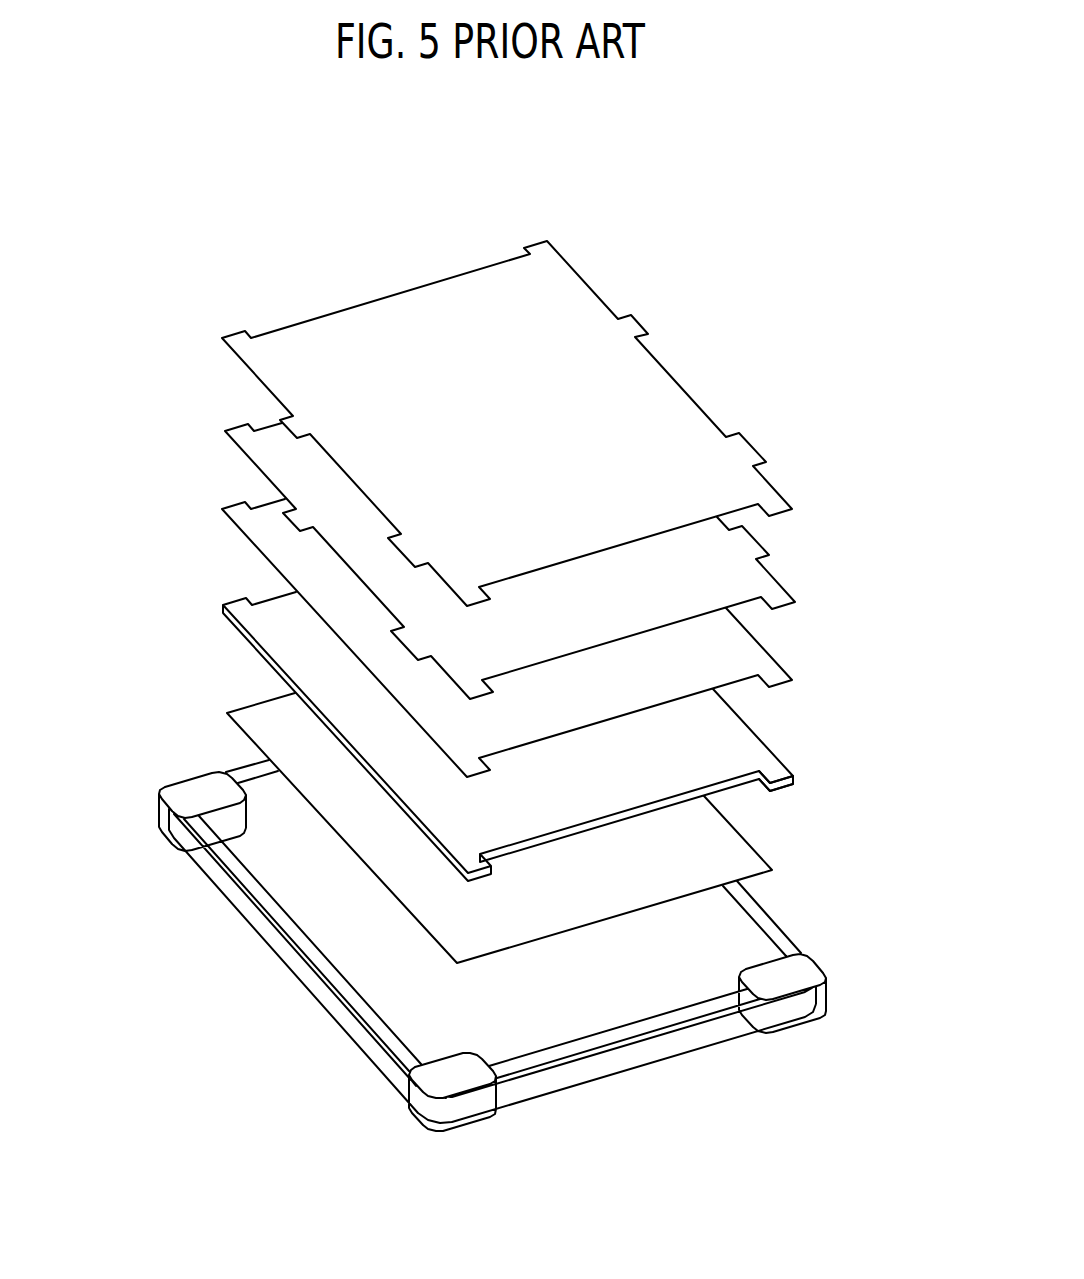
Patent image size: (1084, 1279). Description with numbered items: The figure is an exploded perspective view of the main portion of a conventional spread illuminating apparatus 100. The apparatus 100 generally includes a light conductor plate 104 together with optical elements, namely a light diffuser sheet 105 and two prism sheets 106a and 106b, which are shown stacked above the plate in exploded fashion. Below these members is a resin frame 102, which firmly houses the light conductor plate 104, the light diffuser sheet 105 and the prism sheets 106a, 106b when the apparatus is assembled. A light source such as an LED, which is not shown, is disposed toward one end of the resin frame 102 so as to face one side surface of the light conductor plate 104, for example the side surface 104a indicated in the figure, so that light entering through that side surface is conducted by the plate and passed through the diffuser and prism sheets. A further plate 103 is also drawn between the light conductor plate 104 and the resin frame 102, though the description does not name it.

The spread illuminating apparatus 100 is at (379, 238).
The resin frame 102 is at (162, 833).
The lower plate 103 is at (745, 865).
The light conductor plate 104 is at (752, 757).
The side surface 104a is at (732, 783).
The light diffuser sheet 105 is at (752, 663).
The prism sheet 106a is at (272, 456).
The prism sheet 106b is at (300, 342).